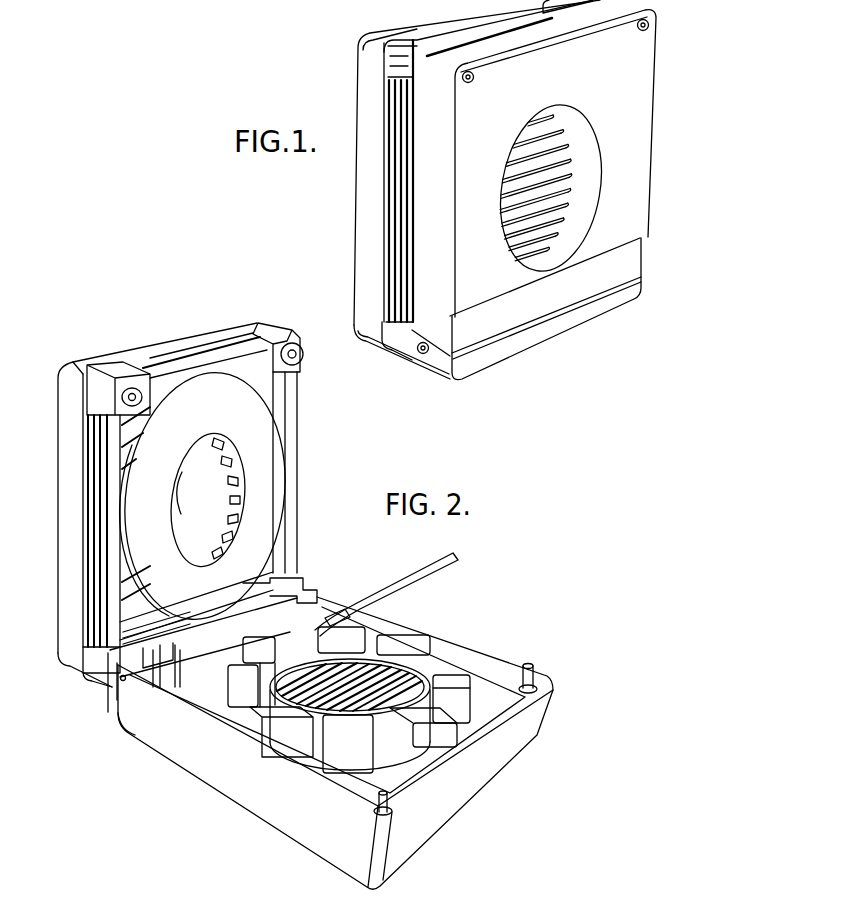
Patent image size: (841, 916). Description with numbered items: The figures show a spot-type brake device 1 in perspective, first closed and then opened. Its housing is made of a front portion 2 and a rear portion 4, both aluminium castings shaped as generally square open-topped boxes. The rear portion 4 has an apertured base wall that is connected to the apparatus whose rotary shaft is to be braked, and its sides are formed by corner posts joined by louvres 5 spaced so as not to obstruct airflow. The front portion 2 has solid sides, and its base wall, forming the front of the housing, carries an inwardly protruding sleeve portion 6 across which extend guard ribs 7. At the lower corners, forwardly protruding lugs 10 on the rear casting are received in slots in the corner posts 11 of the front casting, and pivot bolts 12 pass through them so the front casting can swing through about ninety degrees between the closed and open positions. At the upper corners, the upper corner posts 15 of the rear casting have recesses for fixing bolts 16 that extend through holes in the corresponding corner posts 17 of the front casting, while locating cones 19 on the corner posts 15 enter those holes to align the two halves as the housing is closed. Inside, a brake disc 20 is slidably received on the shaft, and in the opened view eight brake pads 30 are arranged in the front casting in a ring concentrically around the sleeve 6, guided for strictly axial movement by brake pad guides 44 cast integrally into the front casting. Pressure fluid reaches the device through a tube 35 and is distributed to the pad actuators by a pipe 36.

In FIG. 1, the brake device 1 is at (483, 190).
In FIG. 2, the brake device 1 is at (305, 589).
In FIG. 1, the front portion 2 is at (633, 213).
In FIG. 2, the front portion 2 is at (473, 763).
In FIG. 1, the rear portion 4 is at (360, 178).
In FIG. 2, the rear portion 4 is at (288, 500).
In FIG. 1, the louvres 5 is at (387, 257).
In FIG. 2, the louvres 5 is at (184, 352).
In FIG. 1, the sleeve portion 6 is at (582, 131).
In FIG. 2, the sleeve portion 6 is at (378, 660).
In FIG. 1, the guard ribs 7 is at (521, 219).
In FIG. 2, the guard ribs 7 is at (423, 656).
In FIG. 2, the lugs 10 is at (298, 594).
In FIG. 2, the corner posts 11 is at (128, 730).
In FIG. 2, the pivot bolts 12 is at (122, 696).
In FIG. 1, the upper corner posts 15 is at (393, 65).
In FIG. 2, the upper corner posts 15 is at (277, 330).
In FIG. 1, the fixing bolts 16 is at (637, 28).
In FIG. 2, the fixing bolts 16 is at (360, 810).
In FIG. 2, the corner posts 17 is at (526, 665).
In FIG. 2, the locating cones 19 is at (303, 342).
In FIG. 2, the brake disc 20 is at (256, 433).
In FIG. 2, the brake pads 30 is at (170, 682).
In FIG. 2, the tube 35 is at (421, 573).
In FIG. 2, the pipe 36 is at (333, 603).
In FIG. 2, the brake pad guides 44 is at (397, 768).